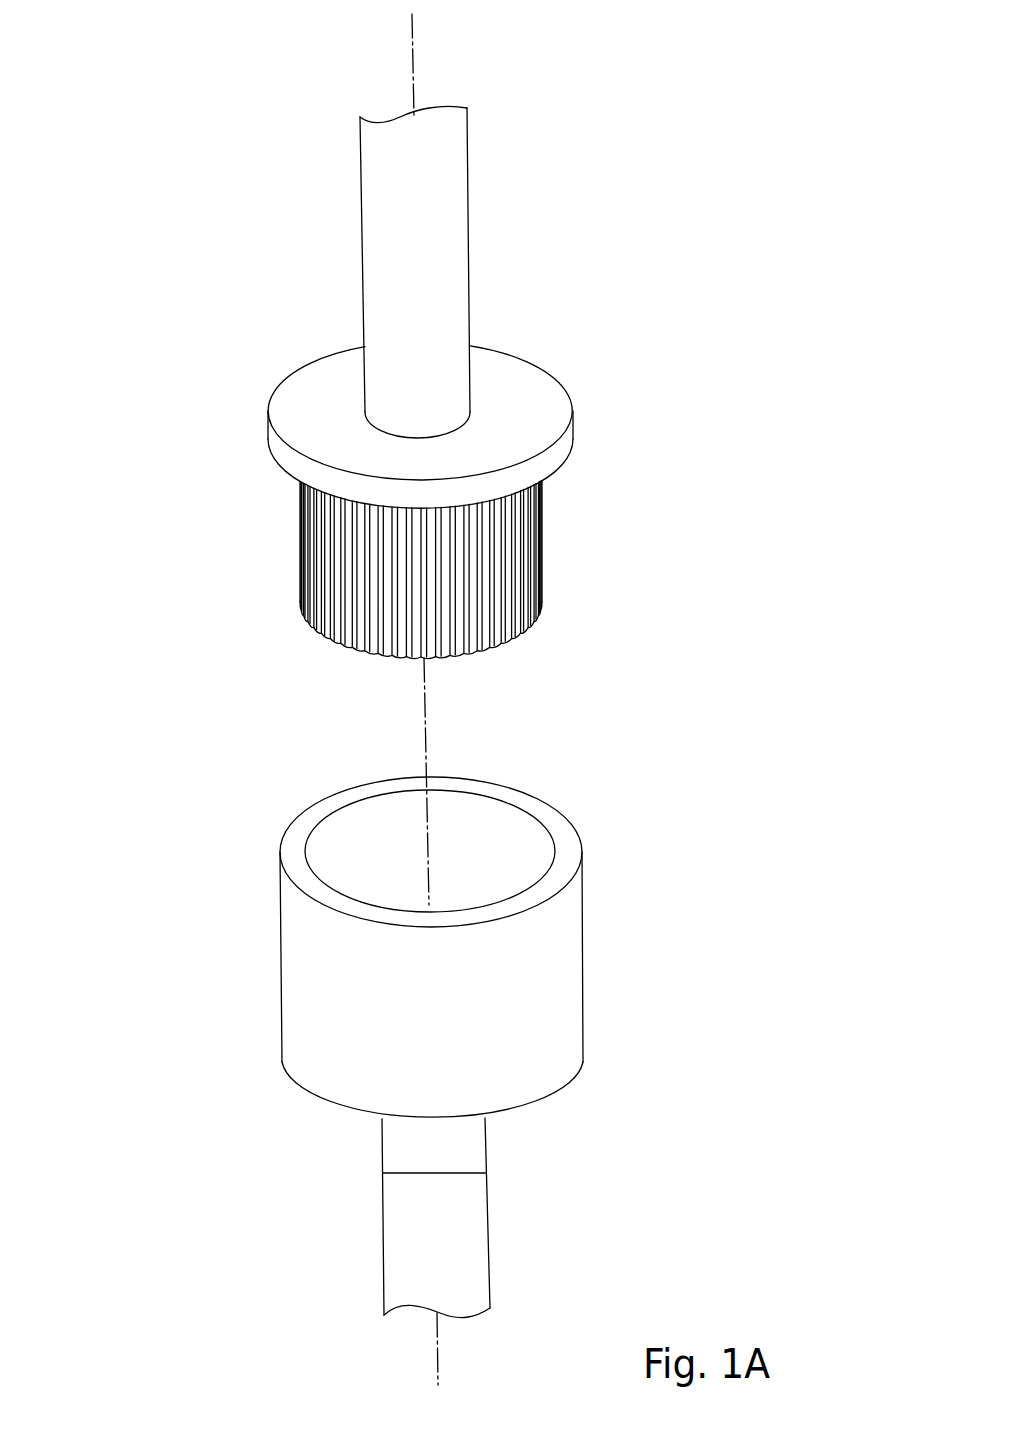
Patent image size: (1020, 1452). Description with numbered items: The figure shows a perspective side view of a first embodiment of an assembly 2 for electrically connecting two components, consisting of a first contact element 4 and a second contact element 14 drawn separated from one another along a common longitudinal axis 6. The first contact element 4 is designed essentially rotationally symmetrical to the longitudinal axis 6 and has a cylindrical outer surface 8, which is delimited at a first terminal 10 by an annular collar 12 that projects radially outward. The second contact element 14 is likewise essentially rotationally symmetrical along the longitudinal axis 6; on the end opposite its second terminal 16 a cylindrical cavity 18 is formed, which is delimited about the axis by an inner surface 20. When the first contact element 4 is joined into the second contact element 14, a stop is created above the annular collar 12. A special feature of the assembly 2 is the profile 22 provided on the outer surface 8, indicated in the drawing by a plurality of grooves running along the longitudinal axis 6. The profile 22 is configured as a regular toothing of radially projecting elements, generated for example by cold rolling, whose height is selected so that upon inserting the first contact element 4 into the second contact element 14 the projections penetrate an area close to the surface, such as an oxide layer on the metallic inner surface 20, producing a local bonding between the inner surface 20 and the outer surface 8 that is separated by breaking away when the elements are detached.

The assembly 2 is at (216, 637).
The first contact element 4 is at (612, 187).
The longitudinal axis 6 is at (425, 712).
The cylindrical outer surface 8 is at (482, 570).
The first terminal 10 is at (400, 197).
The annular collar 12 is at (528, 388).
The second contact element 14 is at (610, 1176).
The second terminal 16 is at (410, 1222).
The cylindrical cavity 18 is at (431, 895).
The inner surface 20 is at (520, 852).
The profile 22 is at (468, 649).